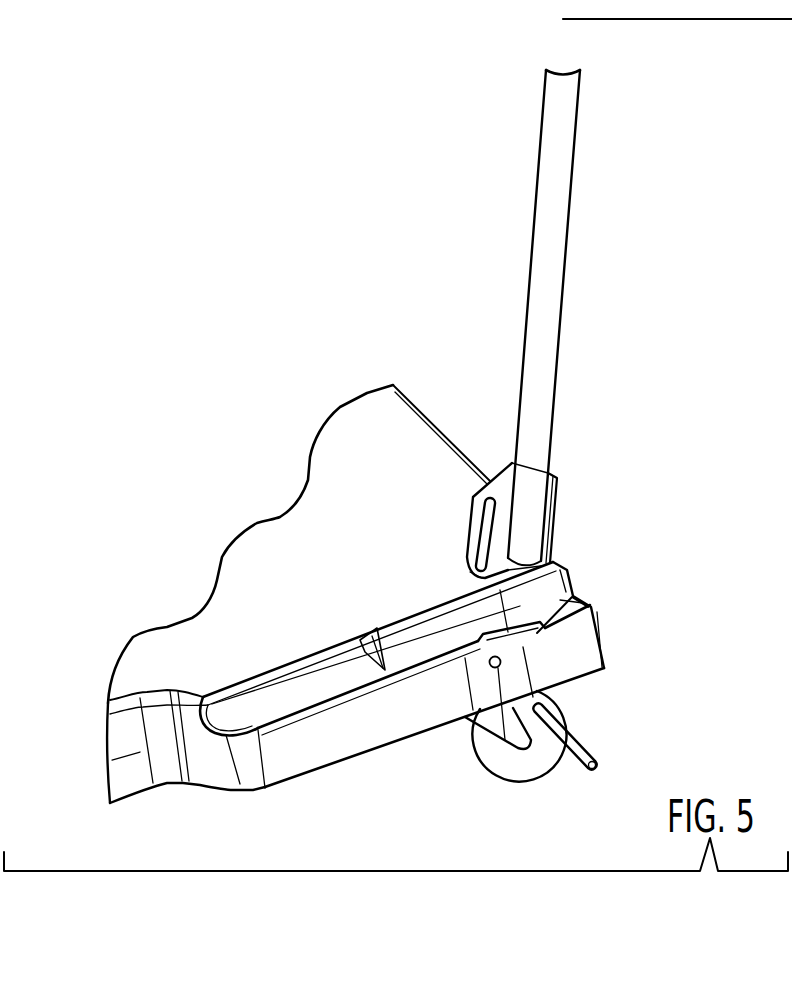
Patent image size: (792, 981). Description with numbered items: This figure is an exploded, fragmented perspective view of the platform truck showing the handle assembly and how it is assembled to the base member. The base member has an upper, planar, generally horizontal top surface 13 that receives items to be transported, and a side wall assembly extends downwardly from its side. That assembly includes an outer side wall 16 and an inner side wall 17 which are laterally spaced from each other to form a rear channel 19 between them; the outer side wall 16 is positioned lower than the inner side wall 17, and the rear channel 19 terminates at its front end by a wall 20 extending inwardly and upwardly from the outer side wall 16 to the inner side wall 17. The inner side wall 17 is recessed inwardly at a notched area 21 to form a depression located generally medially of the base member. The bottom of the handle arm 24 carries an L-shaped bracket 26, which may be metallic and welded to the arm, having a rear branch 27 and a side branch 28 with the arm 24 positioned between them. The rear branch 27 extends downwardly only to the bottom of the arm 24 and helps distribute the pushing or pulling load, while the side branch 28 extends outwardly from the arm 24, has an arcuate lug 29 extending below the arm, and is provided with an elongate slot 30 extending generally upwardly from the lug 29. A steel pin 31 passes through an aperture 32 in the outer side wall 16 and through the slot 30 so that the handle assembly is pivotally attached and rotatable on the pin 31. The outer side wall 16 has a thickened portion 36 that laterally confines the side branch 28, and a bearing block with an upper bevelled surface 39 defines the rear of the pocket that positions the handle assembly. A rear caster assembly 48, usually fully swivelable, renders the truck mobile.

The top surface 13 is at (207, 635).
The outer side wall 16 is at (360, 735).
The inner side wall 17 is at (268, 690).
The rear channel 19 is at (247, 722).
The wall 20 is at (168, 760).
The notched area 21 is at (133, 772).
The handle arm 24 is at (553, 240).
The bracket 26 is at (570, 469).
The rear branch 27 is at (557, 512).
The side branch 28 is at (497, 487).
The arcuate lug 29 is at (482, 576).
The elongate slot 30 is at (490, 528).
The steel pin 31 is at (597, 757).
The aperture 32 is at (490, 668).
The thickened portion 36 is at (493, 652).
The upper bevelled surface 39 is at (577, 598).
The rear caster assembly 48 is at (515, 738).